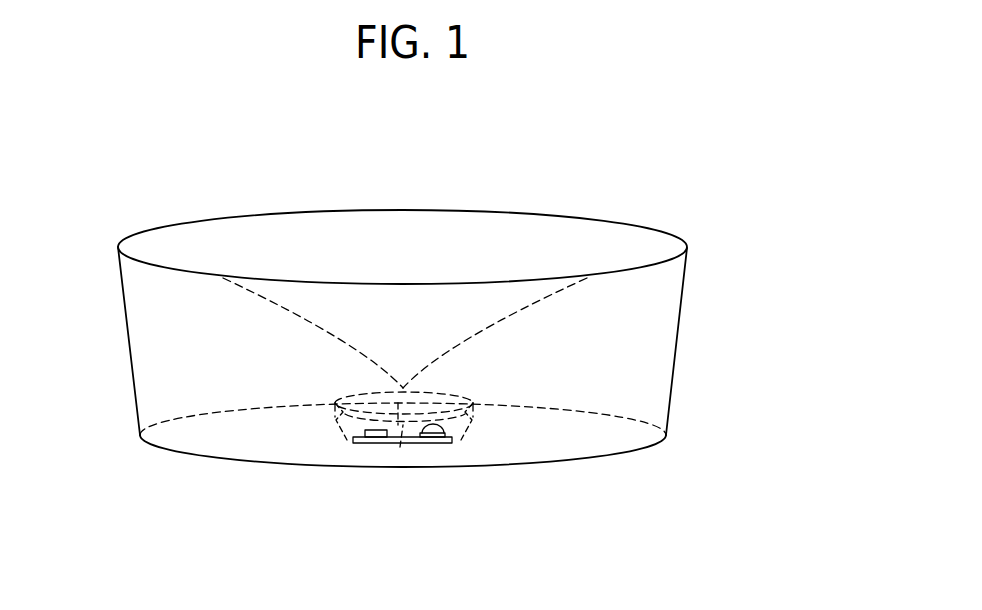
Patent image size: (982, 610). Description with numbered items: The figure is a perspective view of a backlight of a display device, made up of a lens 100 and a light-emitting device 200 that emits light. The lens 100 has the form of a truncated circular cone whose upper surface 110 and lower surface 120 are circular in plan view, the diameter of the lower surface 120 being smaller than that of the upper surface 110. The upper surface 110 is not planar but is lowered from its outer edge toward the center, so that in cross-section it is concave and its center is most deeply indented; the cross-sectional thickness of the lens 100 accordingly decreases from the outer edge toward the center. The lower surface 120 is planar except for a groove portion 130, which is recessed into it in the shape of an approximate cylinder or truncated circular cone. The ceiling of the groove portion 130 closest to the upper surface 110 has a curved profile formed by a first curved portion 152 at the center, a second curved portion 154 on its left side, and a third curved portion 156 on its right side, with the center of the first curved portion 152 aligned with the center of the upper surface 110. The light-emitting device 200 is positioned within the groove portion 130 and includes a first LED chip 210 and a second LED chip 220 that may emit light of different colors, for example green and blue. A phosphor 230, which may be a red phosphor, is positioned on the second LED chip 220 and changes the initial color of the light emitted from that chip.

The lens 100 is at (708, 267).
The upper surface 110 is at (272, 288).
The lower surface 120 is at (222, 458).
The groove portion 130 is at (462, 434).
The first curved portion 152 is at (400, 449).
The second curved portion 154 is at (337, 426).
The third curved portion 156 is at (457, 446).
The light-emitting device 200 is at (390, 446).
The first LED chip 210 is at (376, 443).
The second LED chip 220 is at (434, 443).
The phosphor 230 is at (425, 428).